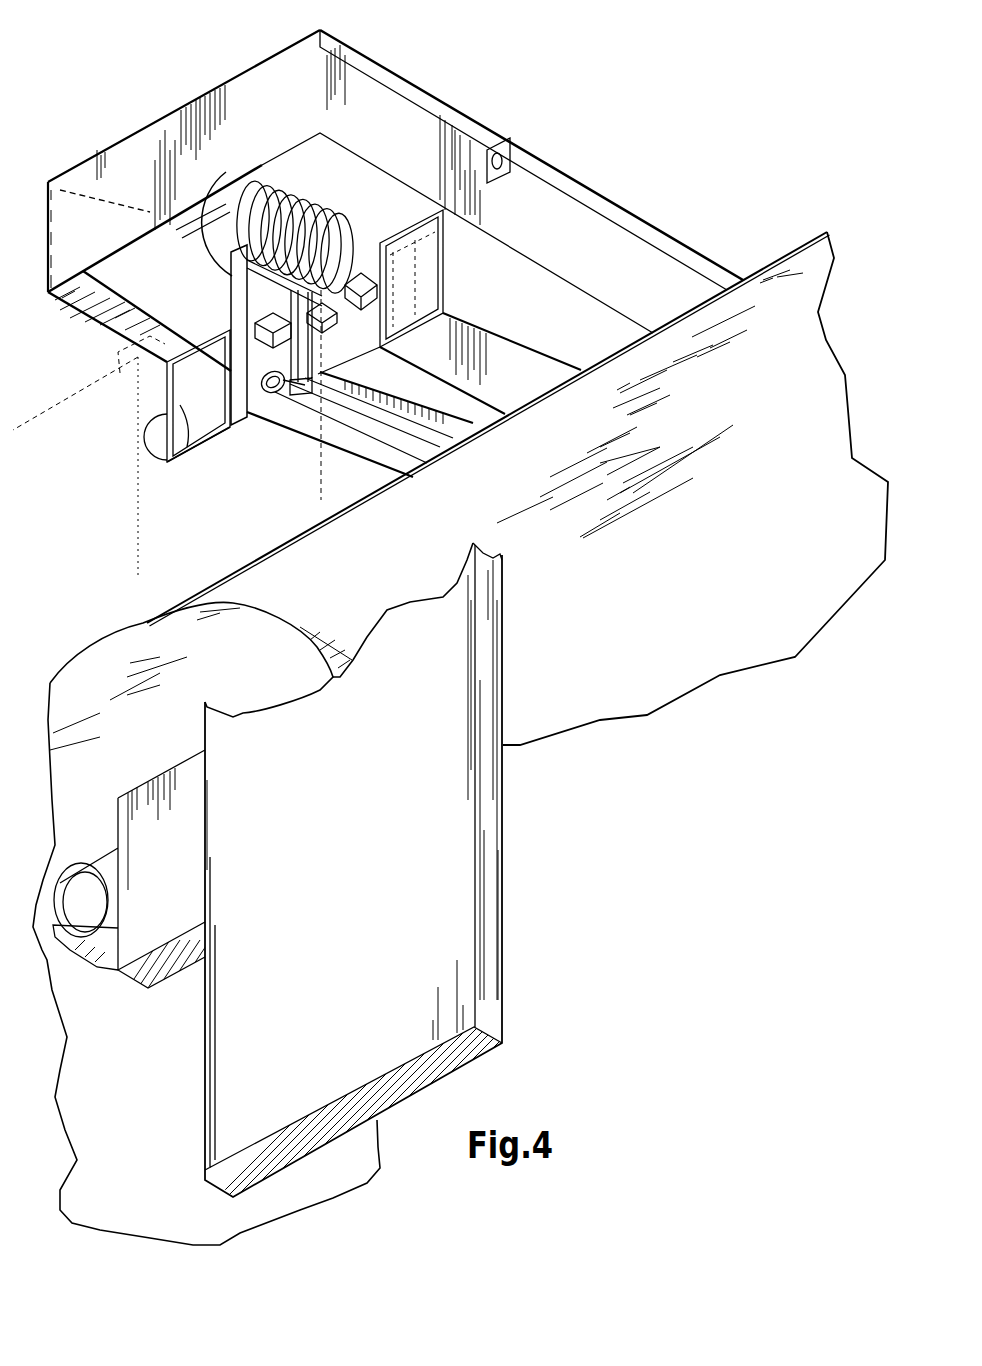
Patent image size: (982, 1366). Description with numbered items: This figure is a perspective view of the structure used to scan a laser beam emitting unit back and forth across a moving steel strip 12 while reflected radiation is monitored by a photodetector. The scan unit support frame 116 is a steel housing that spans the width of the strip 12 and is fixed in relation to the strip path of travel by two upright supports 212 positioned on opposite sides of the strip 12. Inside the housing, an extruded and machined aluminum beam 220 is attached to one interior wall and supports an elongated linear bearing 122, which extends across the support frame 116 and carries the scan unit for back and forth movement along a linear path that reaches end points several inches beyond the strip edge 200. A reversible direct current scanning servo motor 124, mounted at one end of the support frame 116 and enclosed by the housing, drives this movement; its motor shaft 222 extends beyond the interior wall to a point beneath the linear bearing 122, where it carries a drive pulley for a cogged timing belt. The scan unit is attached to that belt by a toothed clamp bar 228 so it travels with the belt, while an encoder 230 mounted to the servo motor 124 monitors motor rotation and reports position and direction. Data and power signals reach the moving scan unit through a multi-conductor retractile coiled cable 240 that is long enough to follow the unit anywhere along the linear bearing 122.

The strip 12 is at (260, 585).
The scan unit support frame 116 is at (512, 100).
The linear bearing 122 is at (230, 307).
The scanning servo motor 124 is at (203, 420).
The strip edge 200 is at (340, 513).
The upright support 212 is at (240, 1010).
The aluminum beam 220 is at (226, 172).
The motor shaft 222 is at (262, 378).
The toothed clamp bar 228 is at (300, 392).
The encoder 230 is at (153, 440).
The retractile coiled cable 240 is at (318, 200).